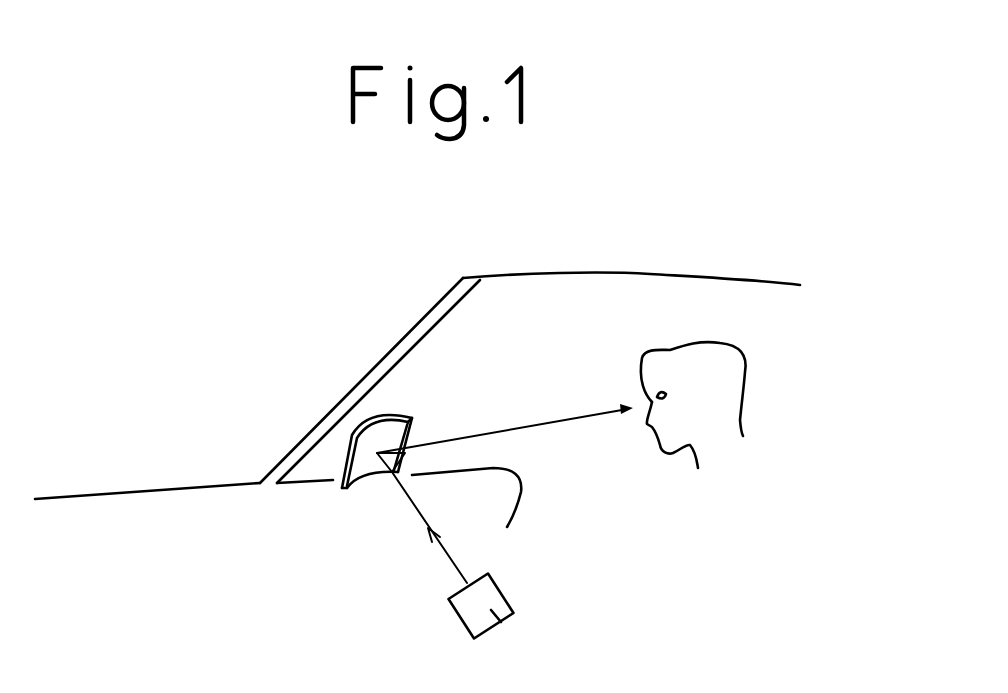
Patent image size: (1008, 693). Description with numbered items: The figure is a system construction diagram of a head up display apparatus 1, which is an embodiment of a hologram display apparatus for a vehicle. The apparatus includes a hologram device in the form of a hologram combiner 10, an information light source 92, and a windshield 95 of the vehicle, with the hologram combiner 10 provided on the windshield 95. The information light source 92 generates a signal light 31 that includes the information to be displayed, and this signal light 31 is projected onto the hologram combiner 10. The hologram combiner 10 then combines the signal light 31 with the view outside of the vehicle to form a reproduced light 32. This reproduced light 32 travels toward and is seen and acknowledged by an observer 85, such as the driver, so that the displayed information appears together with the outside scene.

The head up display apparatus 1 is at (417, 341).
The windshield 95 is at (378, 360).
The hologram combiner 10 is at (407, 413).
The reproduced light 32 is at (567, 420).
The signal light 31 is at (454, 564).
The information light source 92 is at (504, 624).
The observer 85 is at (730, 377).